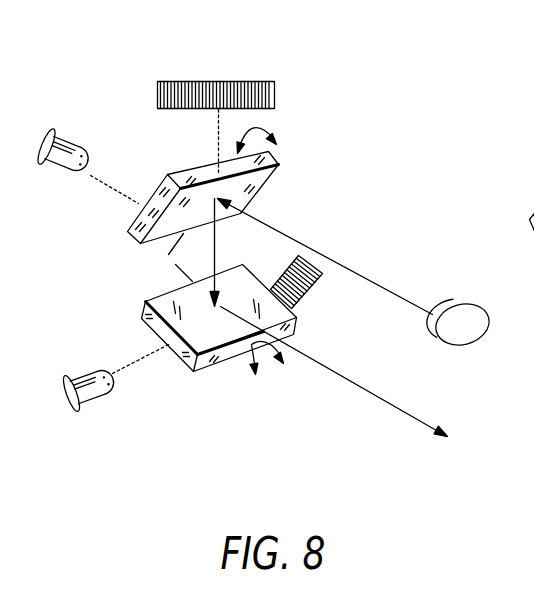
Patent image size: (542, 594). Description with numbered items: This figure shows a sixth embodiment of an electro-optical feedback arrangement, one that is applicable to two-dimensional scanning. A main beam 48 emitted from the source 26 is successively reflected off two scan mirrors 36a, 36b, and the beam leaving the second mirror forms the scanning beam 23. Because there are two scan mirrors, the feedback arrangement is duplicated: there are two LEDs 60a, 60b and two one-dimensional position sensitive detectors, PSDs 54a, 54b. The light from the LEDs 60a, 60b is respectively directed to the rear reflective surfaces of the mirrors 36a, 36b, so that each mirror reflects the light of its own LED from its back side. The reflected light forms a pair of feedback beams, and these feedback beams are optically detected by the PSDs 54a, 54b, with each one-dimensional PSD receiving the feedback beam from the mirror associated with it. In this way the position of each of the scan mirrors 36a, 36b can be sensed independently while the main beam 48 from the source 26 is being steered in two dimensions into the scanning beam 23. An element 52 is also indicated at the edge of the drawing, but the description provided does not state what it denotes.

The scanning beam 23 is at (377, 392).
The source 26 is at (468, 320).
The scan mirror 36a is at (280, 175).
The scan mirror 36b is at (282, 315).
The main beam 48 is at (402, 292).
The optical element 52 is at (541, 368).
The one-dimensional PSD 54a is at (273, 92).
The one-dimensional PSD 54b is at (282, 280).
The LED 60a is at (65, 153).
The LED 60b is at (83, 370).